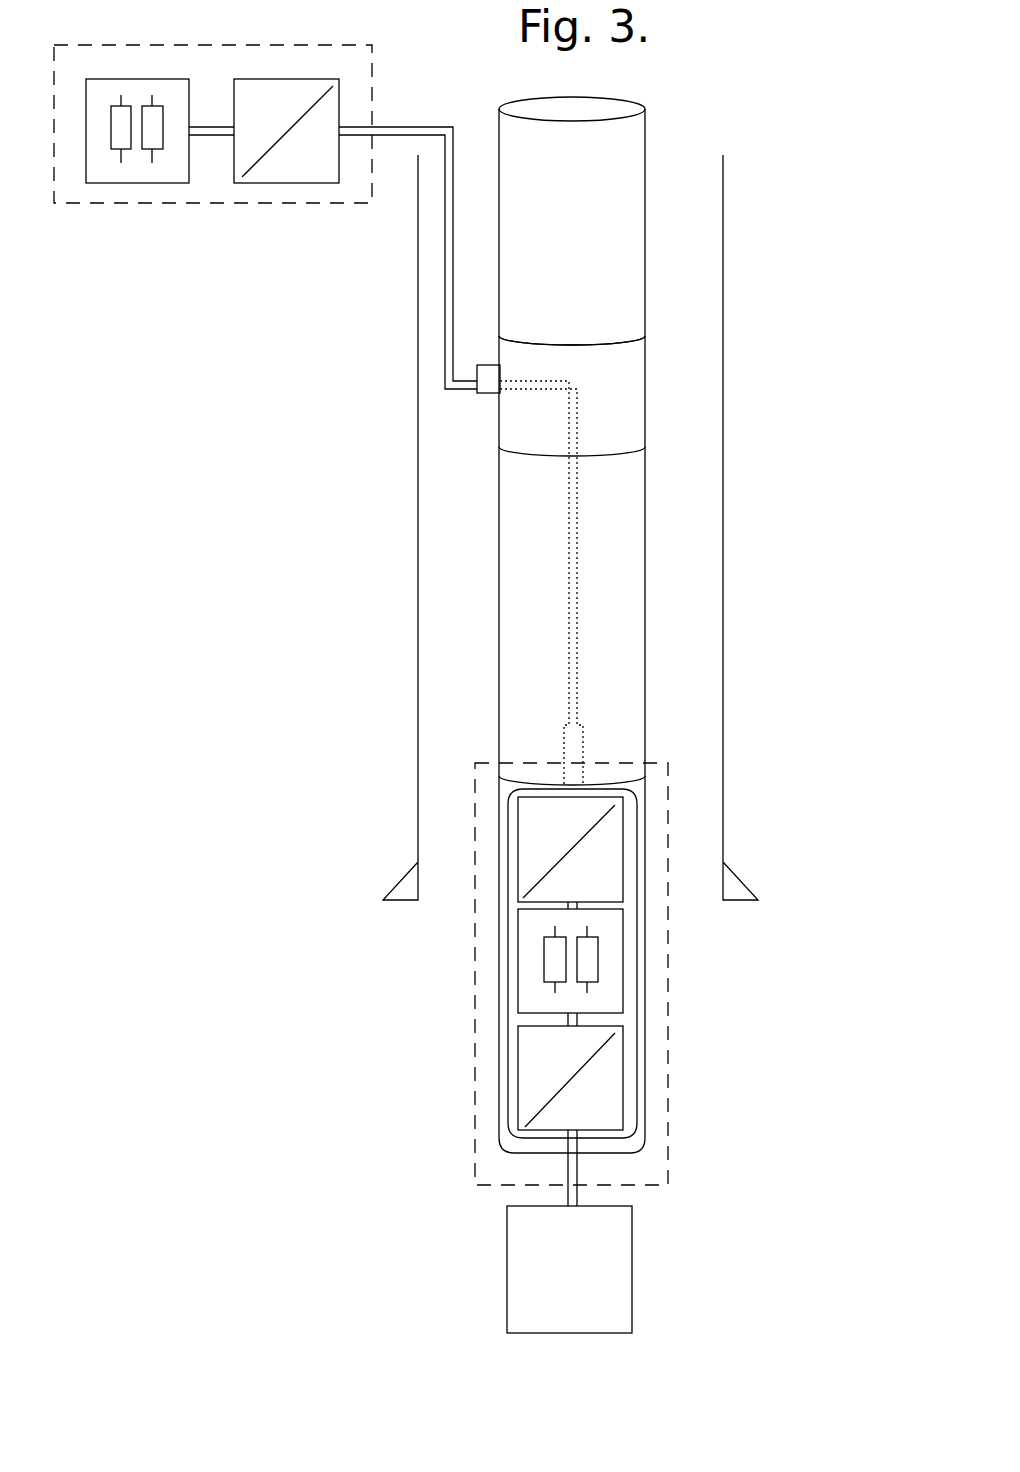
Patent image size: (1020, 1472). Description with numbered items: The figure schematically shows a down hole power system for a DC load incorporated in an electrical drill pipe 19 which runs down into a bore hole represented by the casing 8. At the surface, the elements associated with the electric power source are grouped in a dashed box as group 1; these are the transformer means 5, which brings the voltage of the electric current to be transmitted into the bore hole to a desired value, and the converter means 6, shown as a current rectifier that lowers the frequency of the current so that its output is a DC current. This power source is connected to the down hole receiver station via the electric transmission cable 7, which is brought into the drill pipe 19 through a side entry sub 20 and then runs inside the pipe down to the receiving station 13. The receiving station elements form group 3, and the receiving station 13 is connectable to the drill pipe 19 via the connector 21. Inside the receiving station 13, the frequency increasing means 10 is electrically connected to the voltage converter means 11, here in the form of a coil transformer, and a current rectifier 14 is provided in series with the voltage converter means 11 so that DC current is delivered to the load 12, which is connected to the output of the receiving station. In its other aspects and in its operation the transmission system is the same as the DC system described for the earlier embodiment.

The power source group 1 is at (372, 72).
The transformer means 5 is at (137, 183).
The converter means 6 is at (283, 183).
The casing 8 is at (724, 270).
The electrical drill pipe 19 is at (637, 154).
The side entry sub 20 is at (645, 385).
The electric transmission cable 7 is at (578, 575).
The receiver station group 3 is at (497, 763).
The connector 21 is at (670, 762).
The receiving station 13 is at (646, 962).
The frequency increasing means 10 is at (518, 845).
The voltage converter means 11 is at (518, 957).
The current rectifier 14 is at (518, 1083).
The load 12 is at (632, 1262).